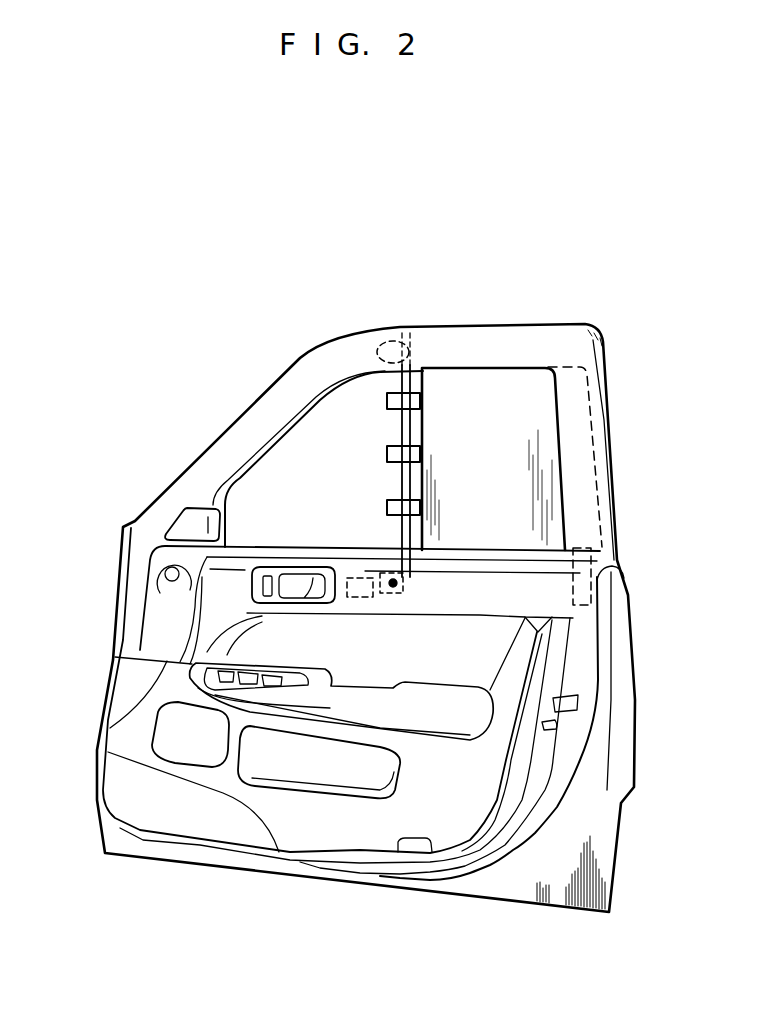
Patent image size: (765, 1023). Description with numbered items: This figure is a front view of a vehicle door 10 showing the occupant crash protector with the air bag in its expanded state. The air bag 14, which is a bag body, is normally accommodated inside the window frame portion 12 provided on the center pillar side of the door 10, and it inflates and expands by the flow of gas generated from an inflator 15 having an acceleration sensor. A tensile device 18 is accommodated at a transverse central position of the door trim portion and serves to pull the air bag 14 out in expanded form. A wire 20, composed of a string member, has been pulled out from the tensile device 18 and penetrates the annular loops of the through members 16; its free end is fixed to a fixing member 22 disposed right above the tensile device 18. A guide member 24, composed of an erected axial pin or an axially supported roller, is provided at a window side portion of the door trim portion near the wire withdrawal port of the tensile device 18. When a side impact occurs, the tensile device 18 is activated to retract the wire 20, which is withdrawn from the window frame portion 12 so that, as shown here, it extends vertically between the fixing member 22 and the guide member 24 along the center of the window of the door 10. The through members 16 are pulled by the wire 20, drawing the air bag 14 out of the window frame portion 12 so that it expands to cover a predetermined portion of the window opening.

The door 10 is at (118, 557).
The window frame portion 12 is at (583, 356).
The air bag 14 is at (493, 407).
The inflator 15 is at (583, 587).
The through members 16 is at (387, 503).
The tensile device 18 is at (350, 577).
The wire 20 is at (380, 378).
The fixing member 22 is at (391, 338).
The guide member 24 is at (391, 580).